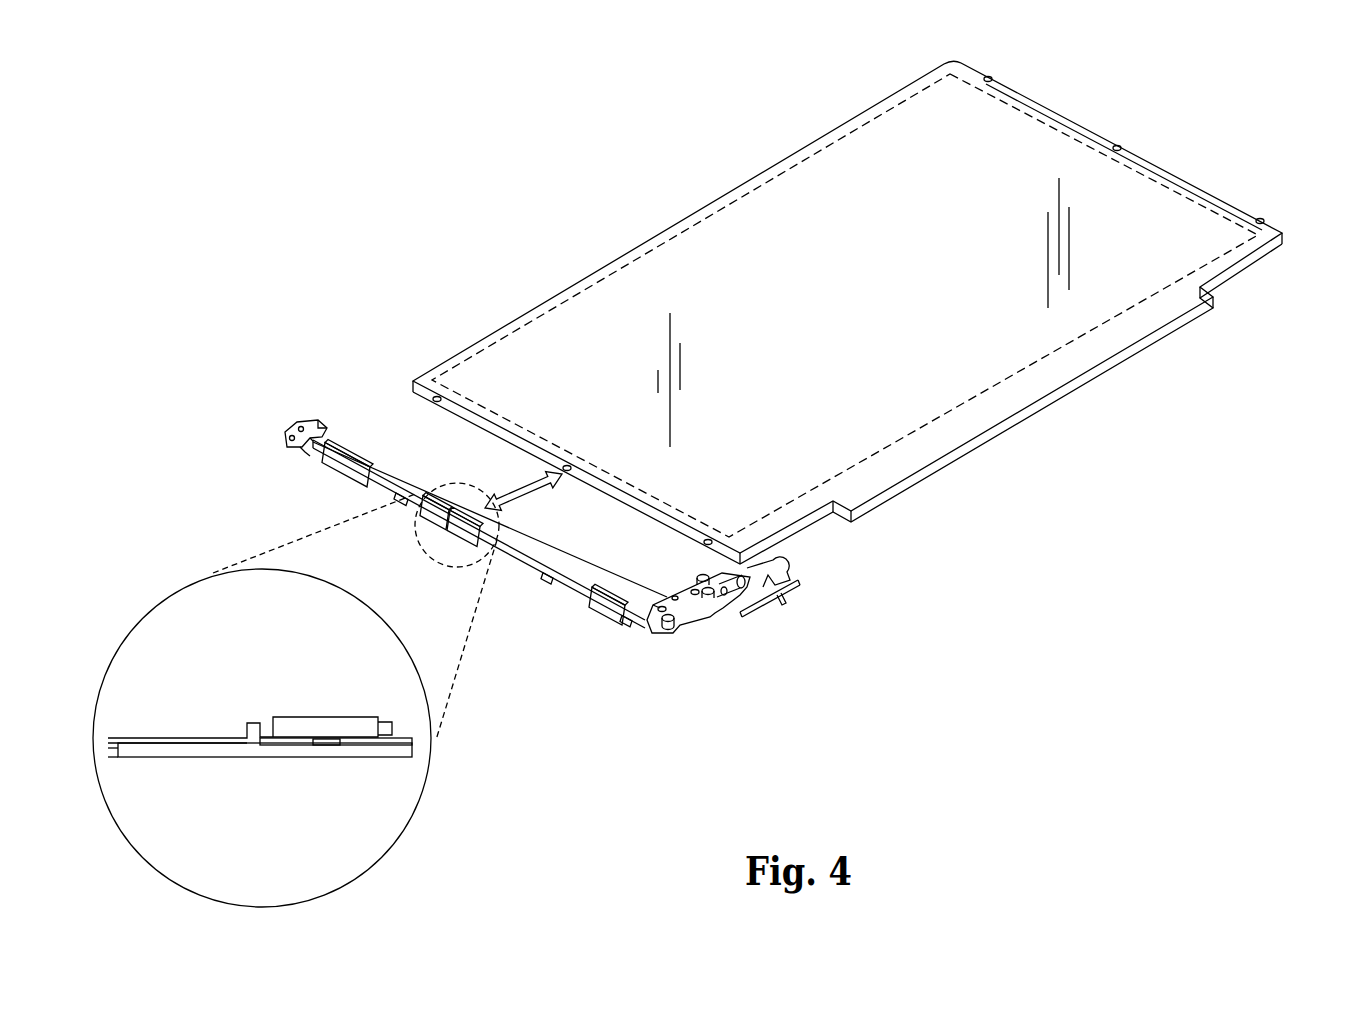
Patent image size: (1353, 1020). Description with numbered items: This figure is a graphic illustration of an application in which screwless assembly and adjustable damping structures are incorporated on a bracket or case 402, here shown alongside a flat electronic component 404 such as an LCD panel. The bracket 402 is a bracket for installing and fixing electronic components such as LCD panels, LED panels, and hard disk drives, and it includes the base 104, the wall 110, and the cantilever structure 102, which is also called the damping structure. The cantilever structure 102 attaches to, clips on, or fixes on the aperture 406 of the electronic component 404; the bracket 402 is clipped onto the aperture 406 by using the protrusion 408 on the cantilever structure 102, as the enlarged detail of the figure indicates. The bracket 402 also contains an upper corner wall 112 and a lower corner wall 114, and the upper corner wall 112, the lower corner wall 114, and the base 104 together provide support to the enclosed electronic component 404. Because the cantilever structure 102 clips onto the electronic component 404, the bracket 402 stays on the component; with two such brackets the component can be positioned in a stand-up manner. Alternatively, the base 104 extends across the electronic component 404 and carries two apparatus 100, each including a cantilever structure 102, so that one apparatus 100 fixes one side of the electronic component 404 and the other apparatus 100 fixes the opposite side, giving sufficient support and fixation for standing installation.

The apparatus 100 is at (384, 471).
The cantilever structure 102 is at (336, 470).
The base 104 is at (598, 582).
The wall 110 is at (398, 497).
The upper corner wall 112 is at (308, 446).
The lower corner wall 114 is at (771, 622).
The bracket or case 402 is at (271, 374).
The electronic component 404 is at (800, 334).
The aperture 406 is at (990, 80).
The protrusion 408 is at (335, 742).